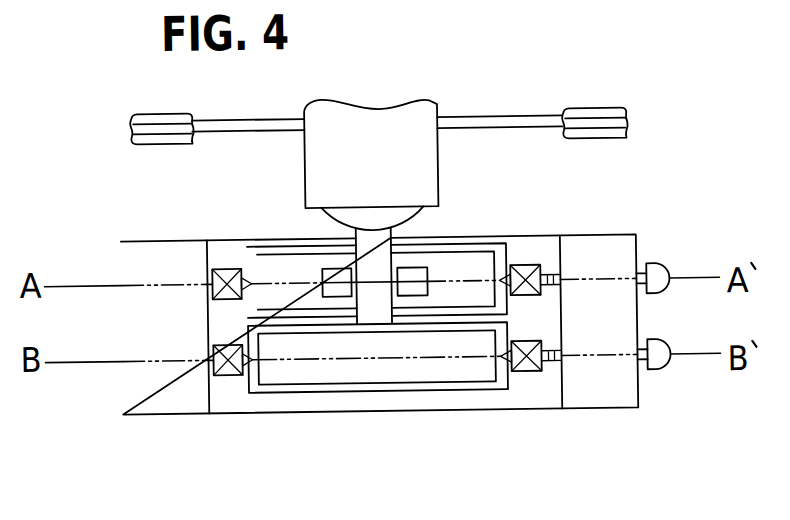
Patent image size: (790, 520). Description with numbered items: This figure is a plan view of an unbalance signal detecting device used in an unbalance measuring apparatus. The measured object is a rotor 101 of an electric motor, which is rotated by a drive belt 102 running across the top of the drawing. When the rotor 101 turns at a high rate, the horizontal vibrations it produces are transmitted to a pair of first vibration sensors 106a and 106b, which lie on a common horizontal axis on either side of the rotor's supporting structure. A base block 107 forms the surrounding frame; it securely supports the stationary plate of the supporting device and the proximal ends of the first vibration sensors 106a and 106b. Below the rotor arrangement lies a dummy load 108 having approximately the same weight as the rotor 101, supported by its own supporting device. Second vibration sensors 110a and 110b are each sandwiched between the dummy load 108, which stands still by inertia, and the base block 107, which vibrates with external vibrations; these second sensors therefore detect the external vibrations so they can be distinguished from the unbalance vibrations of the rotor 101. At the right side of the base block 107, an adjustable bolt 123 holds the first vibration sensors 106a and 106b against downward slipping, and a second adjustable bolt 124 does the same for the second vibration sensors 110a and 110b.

The rotor 101 is at (347, 130).
The drive belt 102 is at (480, 121).
The first vibration sensor 106a is at (225, 267).
The first vibration sensor 106b is at (527, 267).
The base block 107 is at (583, 238).
The dummy load 108 is at (358, 375).
The second vibration sensor 110a is at (228, 373).
The second vibration sensor 110b is at (527, 374).
The adjustable bolt 123 is at (655, 266).
The adjustable bolt 124 is at (658, 374).